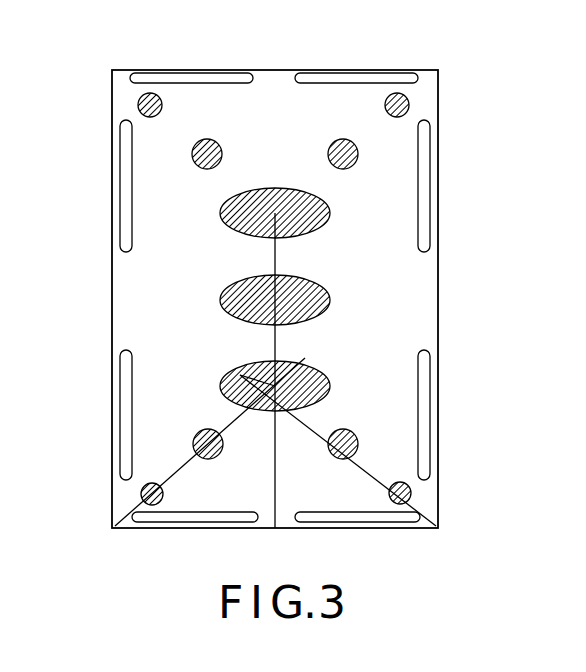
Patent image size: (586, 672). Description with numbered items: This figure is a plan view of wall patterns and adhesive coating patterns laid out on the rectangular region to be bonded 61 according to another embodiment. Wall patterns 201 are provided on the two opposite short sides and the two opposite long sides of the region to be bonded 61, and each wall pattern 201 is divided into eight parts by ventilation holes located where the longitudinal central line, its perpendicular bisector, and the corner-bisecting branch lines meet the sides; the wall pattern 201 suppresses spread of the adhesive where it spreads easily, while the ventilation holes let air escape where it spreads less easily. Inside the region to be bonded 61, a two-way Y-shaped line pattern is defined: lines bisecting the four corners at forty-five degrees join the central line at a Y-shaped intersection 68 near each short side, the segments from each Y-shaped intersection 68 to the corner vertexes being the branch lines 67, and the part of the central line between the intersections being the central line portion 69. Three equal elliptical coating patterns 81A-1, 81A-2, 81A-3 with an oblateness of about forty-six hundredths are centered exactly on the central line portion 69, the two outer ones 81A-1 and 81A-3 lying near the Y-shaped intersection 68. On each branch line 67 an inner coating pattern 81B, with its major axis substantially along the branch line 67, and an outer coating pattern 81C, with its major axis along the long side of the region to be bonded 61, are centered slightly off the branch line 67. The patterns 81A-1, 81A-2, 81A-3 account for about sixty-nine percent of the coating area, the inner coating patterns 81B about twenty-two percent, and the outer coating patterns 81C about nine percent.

The region to be bonded 61 is at (112, 280).
The wall pattern 201 is at (320, 71).
The central line portion 69 is at (273, 262).
The coating pattern 81A-1 is at (315, 190).
The coating pattern 81A-2 is at (315, 277).
The coating pattern 81A-3 is at (313, 364).
The branch line 67 is at (183, 462).
The Y-shaped intersection 68 is at (240, 375).
The inner coating pattern 81B is at (225, 448).
The outer coating pattern 81C is at (165, 492).